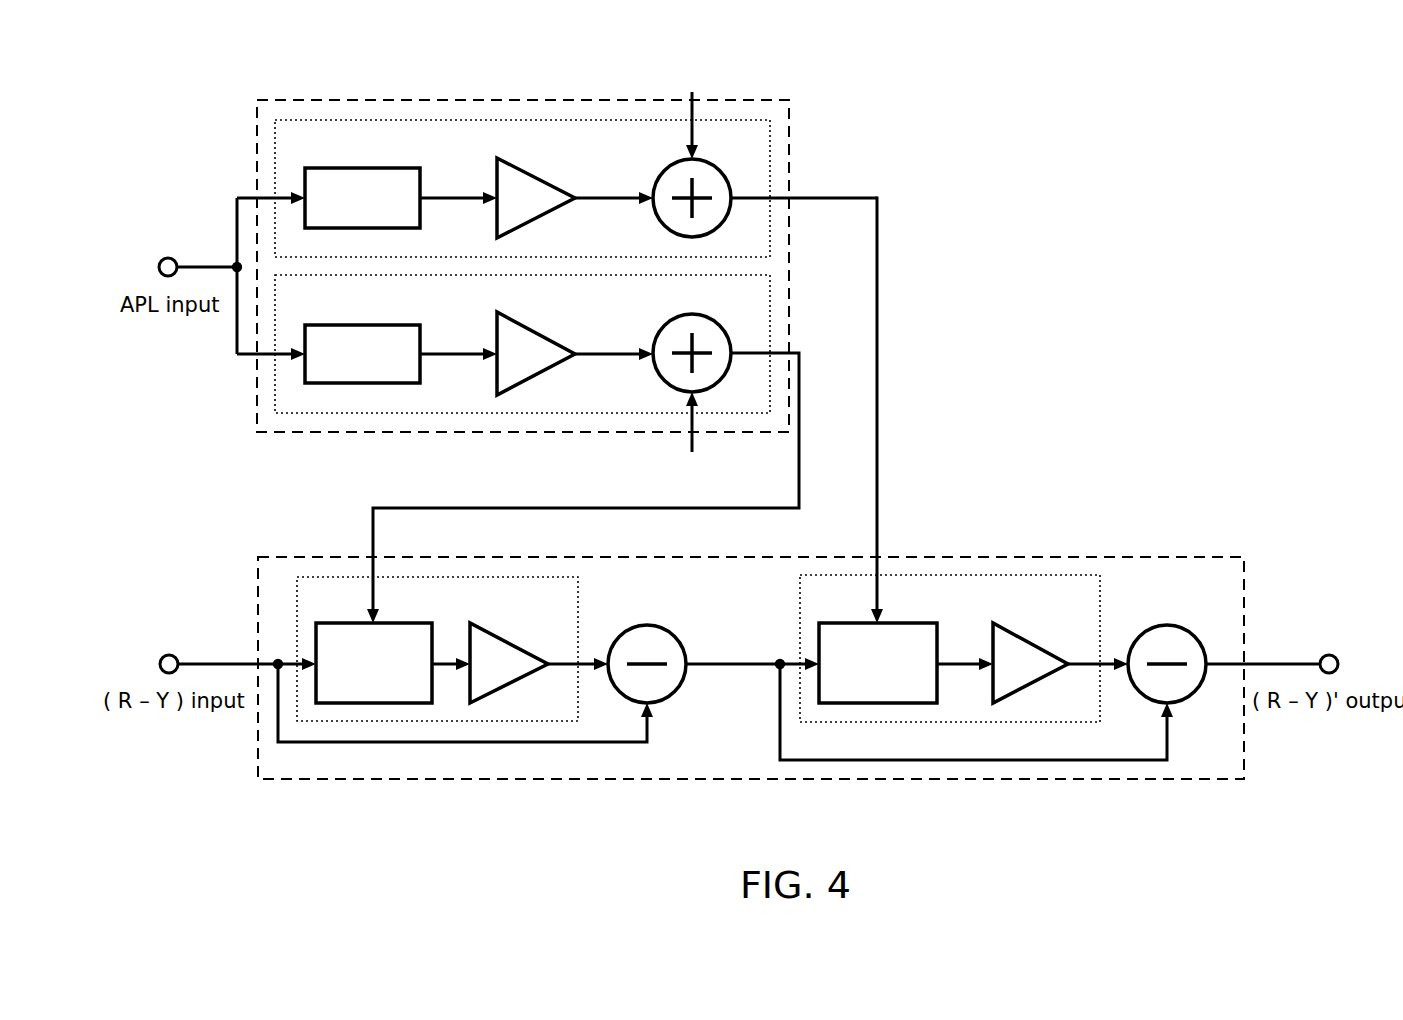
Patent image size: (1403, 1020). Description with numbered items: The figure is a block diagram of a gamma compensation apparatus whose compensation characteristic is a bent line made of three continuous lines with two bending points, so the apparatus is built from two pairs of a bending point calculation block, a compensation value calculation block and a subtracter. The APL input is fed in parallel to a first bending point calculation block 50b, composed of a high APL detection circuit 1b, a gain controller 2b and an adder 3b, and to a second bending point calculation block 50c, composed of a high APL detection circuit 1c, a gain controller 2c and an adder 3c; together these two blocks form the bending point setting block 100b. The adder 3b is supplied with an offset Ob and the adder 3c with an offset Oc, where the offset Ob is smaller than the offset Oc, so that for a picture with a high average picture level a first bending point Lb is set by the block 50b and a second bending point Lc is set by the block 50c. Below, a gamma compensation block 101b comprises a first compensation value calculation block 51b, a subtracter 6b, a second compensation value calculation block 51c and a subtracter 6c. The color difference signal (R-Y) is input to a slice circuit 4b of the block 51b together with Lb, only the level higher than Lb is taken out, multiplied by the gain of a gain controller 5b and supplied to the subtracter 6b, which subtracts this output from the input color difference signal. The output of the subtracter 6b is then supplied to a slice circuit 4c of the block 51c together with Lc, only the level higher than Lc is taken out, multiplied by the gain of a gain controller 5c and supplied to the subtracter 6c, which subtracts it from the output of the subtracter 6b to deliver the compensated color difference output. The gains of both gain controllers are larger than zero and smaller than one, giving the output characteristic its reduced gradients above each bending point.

The high APL detection circuit 1b is at (350, 325).
The high APL detection circuit 1c is at (350, 168).
The gain controller 2b is at (530, 336).
The gain controller 2c is at (530, 180).
The adder 3b is at (720, 323).
The adder 3c is at (720, 168).
The slice circuit 4b is at (400, 623).
The slice circuit 4c is at (905, 623).
The gain controller 5b is at (508, 640).
The gain controller 5c is at (1035, 640).
The subtracter 6b is at (648, 625).
The subtracter 6c is at (1170, 625).
The first bending point calculation block 50b is at (770, 302).
The second bending point calculation block 50c is at (770, 168).
The first compensation value calculation block 51b is at (442, 721).
The second compensation value calculation block 51c is at (965, 722).
The bending point setting block 100b is at (361, 432).
The gamma compensation block 101b is at (756, 779).
The first bending point Lb is at (799, 460).
The second bending point Lc is at (877, 490).
The offset Ob is at (695, 435).
The offset Oc is at (691, 107).